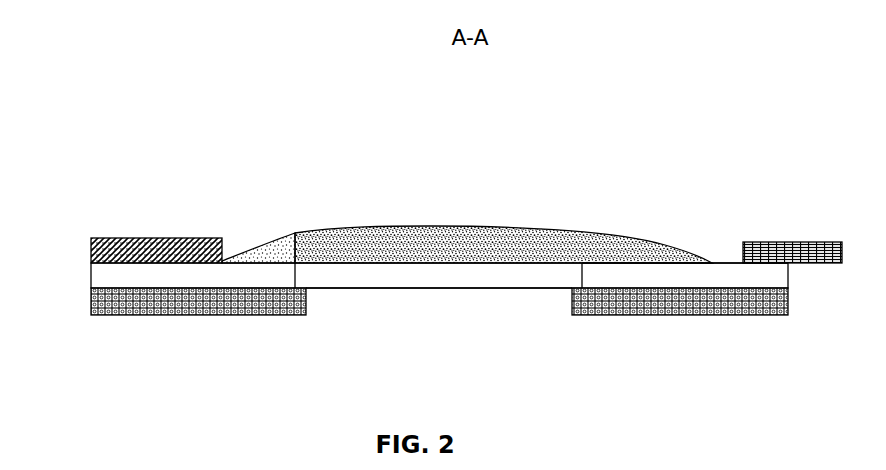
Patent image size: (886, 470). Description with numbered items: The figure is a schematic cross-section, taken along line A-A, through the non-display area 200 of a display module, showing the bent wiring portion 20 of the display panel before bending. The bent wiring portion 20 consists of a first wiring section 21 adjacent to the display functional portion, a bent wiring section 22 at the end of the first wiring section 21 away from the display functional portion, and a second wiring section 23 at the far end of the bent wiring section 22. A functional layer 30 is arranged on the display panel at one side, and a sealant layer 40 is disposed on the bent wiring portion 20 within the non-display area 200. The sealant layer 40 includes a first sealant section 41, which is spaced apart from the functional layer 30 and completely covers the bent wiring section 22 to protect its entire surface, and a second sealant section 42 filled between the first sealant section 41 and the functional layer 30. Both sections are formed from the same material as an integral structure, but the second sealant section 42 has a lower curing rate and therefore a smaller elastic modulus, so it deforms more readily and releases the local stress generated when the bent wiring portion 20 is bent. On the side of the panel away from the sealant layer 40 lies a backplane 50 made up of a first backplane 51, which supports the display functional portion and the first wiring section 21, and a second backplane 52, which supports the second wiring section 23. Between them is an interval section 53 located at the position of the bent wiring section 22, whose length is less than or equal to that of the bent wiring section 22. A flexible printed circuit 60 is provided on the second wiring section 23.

The non-display area 200 is at (847, 98).
The bent wiring portion 20 is at (398, 317).
The first wiring section 21 is at (197, 283).
The bent wiring section 22 is at (370, 282).
The second wiring section 23 is at (685, 285).
The functional layer 30 is at (128, 238).
The sealant layer 40 is at (467, 180).
The first sealant section 41 is at (308, 148).
The second sealant section 42 is at (260, 239).
The backplane 50 is at (398, 330).
The first backplane 51 is at (140, 315).
The second backplane 52 is at (635, 315).
The interval section 53 is at (474, 308).
The flexible printed circuit (FPC) 60 is at (777, 242).